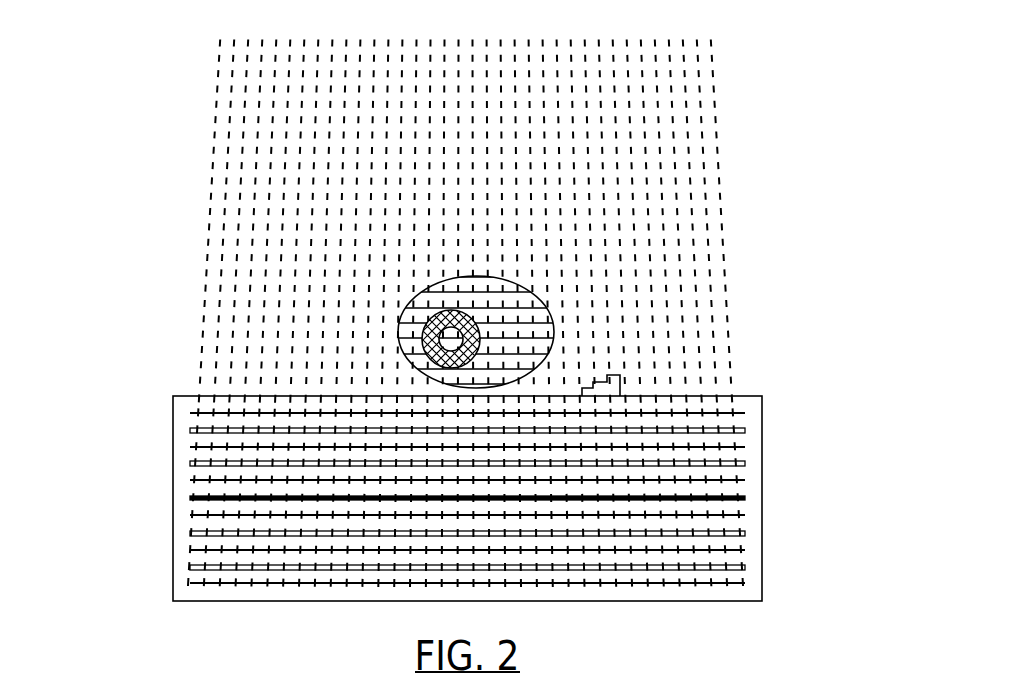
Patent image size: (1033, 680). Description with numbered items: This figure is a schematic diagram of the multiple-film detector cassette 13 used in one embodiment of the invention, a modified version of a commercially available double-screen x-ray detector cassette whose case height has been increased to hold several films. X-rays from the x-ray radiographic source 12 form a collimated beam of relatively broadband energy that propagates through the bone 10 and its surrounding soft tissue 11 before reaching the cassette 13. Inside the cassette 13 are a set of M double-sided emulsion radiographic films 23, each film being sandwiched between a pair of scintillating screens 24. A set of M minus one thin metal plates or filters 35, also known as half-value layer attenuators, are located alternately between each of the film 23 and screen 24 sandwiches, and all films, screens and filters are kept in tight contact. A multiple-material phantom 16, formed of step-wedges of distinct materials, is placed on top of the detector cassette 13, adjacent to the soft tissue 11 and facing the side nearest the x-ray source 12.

The bone 10 is at (397, 332).
The soft tissue 11 is at (420, 302).
The x-ray radiographic source 12 is at (465, 295).
The multiple-film detector cassette 13 is at (362, 602).
The multiple-material phantom 16 is at (622, 385).
The double-sided emulsion radiographic films 23 is at (749, 427).
The scintillating screens 24 is at (192, 447).
The filters 35 is at (190, 463).